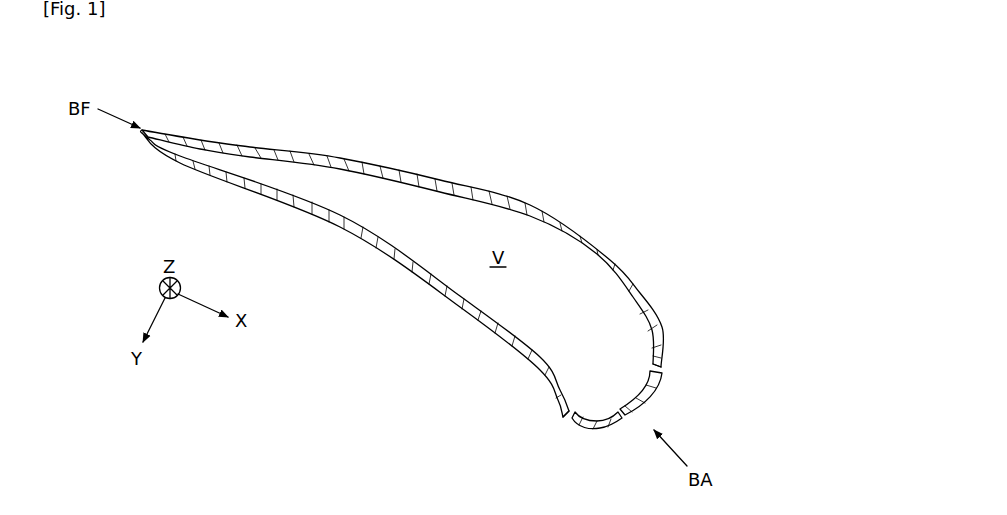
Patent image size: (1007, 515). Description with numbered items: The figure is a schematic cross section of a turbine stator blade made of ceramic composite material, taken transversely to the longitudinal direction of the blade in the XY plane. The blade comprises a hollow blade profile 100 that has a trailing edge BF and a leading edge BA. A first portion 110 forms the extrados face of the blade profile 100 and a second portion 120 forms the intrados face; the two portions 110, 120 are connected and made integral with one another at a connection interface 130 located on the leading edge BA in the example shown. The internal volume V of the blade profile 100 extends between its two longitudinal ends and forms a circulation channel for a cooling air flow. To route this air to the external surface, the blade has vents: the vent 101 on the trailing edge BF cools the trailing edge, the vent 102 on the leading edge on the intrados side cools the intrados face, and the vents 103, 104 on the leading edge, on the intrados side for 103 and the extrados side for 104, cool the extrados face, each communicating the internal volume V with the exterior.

The blade profile 100 is at (457, 152).
The vent 101 is at (154, 145).
The vent 102 is at (558, 414).
The vent 103 is at (617, 422).
The vent 104 is at (663, 353).
The first portion 110 is at (529, 205).
The second portion 120 is at (458, 298).
The connection interface 130 is at (655, 403).